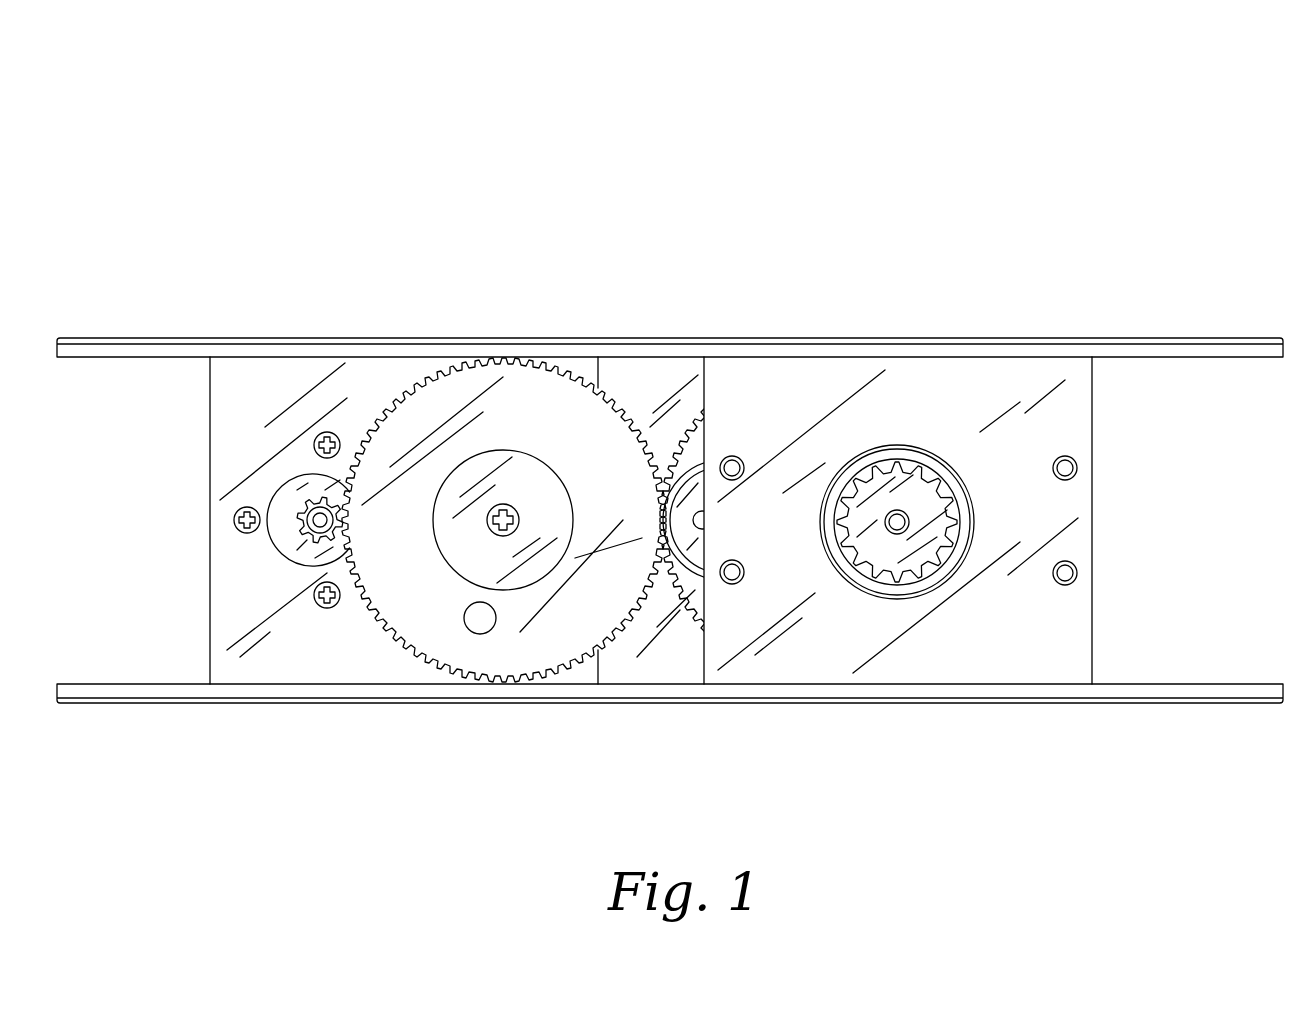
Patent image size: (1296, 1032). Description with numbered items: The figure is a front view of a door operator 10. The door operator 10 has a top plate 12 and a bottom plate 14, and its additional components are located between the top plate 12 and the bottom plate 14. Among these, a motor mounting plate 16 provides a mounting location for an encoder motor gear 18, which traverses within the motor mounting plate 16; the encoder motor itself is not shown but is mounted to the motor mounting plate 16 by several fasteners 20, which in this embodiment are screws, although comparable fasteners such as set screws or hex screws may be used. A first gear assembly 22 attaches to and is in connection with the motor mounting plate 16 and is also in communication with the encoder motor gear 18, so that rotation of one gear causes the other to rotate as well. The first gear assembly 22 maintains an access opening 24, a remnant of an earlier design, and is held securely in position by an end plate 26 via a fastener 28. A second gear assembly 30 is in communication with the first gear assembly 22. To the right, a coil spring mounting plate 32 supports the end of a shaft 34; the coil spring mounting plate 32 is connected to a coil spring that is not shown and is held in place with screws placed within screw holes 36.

The door operator 10 is at (284, 121).
The top plate 12 is at (98, 338).
The bottom plate 14 is at (107, 706).
The motor mounting plate 16 is at (210, 500).
The encoder motor gear 18 is at (300, 507).
The fasteners 20 is at (337, 431).
The first gear assembly 22 is at (588, 426).
The access opening 24 is at (464, 617).
The end plate 26 is at (548, 498).
The fastener 28 is at (498, 533).
The second gear assembly 30 is at (690, 453).
The coil spring mounting plate 32 is at (782, 414).
The shaft 34 is at (872, 480).
The screw holes 36 is at (732, 480).